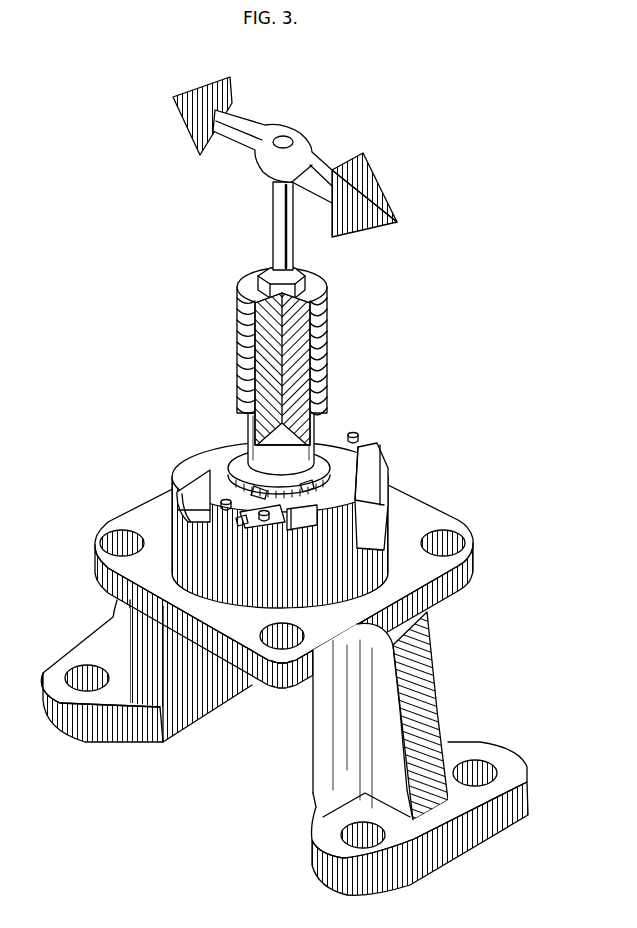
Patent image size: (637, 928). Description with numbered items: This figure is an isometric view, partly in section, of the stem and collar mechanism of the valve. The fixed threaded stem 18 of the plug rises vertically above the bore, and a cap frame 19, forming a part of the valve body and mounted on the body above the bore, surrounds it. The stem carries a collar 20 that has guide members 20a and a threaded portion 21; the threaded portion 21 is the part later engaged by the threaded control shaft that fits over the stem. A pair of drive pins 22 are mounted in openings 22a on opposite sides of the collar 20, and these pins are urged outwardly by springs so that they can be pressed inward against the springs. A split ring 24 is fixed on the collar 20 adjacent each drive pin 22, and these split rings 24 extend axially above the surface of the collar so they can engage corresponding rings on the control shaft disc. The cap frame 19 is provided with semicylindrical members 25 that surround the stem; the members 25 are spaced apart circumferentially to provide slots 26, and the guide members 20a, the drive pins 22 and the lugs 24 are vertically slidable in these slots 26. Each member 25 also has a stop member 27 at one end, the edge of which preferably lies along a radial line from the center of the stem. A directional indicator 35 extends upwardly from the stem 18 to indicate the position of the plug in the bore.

The threaded stem 18 is at (270, 358).
The cap frame 19 is at (470, 570).
The collar 20 is at (233, 447).
The guide members 20a is at (330, 427).
The threaded portion 21 is at (327, 332).
The drive pins 22 is at (262, 515).
The openings 22a is at (247, 520).
The split rings 24 is at (224, 500).
The semicylindrical members 25 is at (190, 522).
The slots 26 is at (193, 487).
The stop member 27 is at (295, 530).
The directional indicator 35 is at (320, 163).